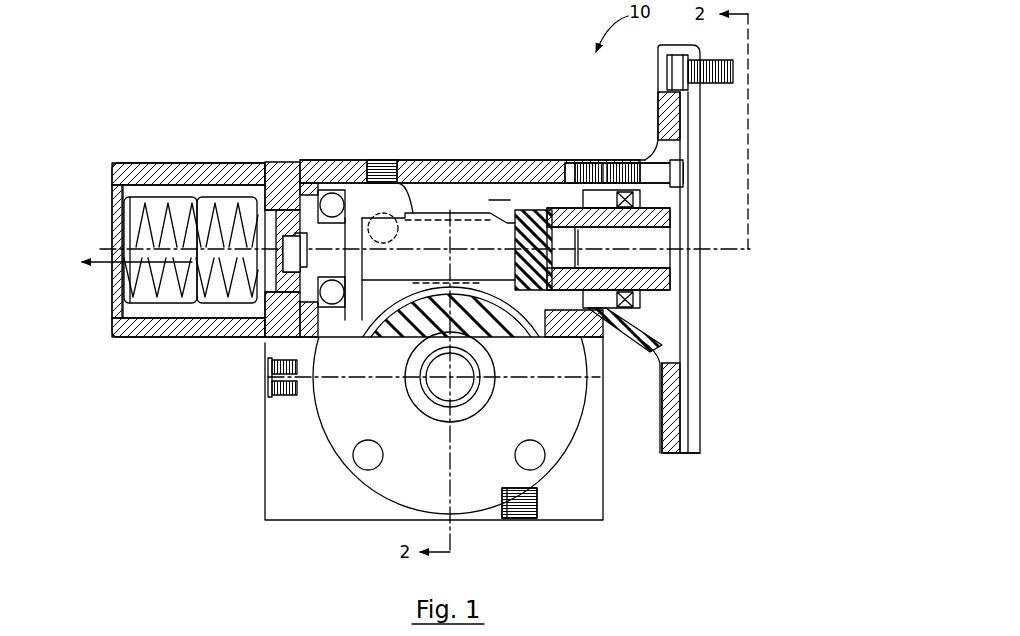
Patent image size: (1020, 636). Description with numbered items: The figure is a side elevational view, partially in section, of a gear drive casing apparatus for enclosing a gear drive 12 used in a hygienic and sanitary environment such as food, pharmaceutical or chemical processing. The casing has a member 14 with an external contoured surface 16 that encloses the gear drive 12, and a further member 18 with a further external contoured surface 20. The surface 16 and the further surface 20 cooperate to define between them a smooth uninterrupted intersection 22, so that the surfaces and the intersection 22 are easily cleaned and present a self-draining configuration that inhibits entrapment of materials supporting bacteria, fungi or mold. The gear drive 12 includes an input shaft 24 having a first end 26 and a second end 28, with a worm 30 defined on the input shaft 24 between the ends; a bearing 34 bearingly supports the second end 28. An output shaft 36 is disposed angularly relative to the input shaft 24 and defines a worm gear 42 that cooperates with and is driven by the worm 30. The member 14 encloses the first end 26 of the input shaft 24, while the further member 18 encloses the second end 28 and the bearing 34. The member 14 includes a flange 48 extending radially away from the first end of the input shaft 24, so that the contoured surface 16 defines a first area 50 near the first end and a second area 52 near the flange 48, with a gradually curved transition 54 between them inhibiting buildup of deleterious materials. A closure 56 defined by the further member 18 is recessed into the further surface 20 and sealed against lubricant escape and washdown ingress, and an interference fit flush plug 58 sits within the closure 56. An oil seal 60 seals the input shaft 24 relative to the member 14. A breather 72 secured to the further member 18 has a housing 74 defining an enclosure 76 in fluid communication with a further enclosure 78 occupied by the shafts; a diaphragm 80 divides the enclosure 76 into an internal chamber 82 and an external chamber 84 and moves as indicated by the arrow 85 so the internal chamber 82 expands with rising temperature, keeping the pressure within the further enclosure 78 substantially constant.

The gear drive 12 is at (439, 234).
The member 14 is at (673, 400).
The external contoured surface 16 is at (615, 165).
The further member 18 is at (580, 325).
The further external contoured surface 20 is at (477, 158).
The intersection 22 is at (595, 164).
The input shaft 24 is at (532, 228).
The first end 26 is at (672, 277).
The second end 28 is at (267, 338).
The worm 30 is at (315, 216).
The bearing 34 is at (313, 340).
The output shaft 36 is at (438, 388).
The worm gear 42 is at (413, 323).
The flange 48 is at (695, 103).
The first area 50 is at (617, 337).
The second area 52 is at (657, 363).
The transition 54 is at (643, 340).
The closure 56 is at (370, 216).
The interference fit flush plug 58 is at (397, 178).
The oil seal 60 is at (643, 197).
The breather 72 is at (96, 341).
The housing 74 is at (216, 164).
The enclosure 76 is at (162, 207).
The further enclosure 78 is at (499, 191).
The diaphragm 80 is at (257, 287).
The internal chamber 82 is at (273, 240).
The external chamber 84 is at (148, 291).
The arrow 85 is at (150, 262).